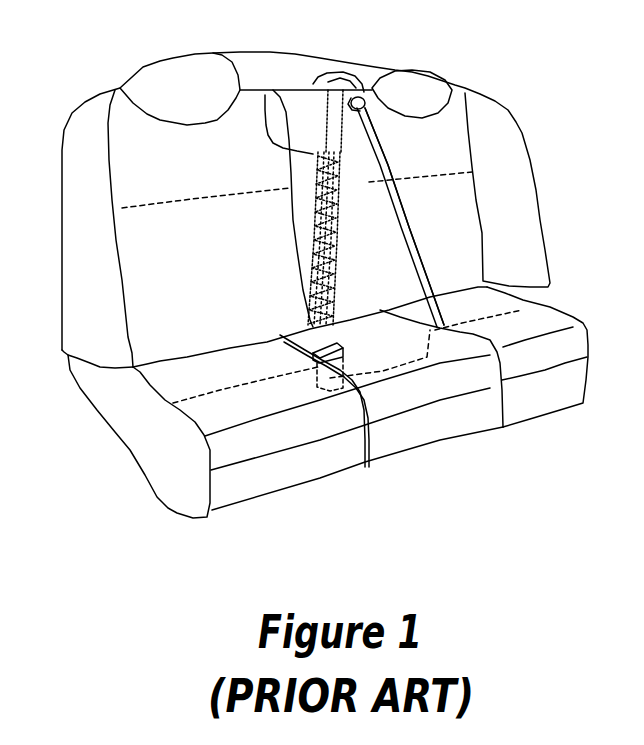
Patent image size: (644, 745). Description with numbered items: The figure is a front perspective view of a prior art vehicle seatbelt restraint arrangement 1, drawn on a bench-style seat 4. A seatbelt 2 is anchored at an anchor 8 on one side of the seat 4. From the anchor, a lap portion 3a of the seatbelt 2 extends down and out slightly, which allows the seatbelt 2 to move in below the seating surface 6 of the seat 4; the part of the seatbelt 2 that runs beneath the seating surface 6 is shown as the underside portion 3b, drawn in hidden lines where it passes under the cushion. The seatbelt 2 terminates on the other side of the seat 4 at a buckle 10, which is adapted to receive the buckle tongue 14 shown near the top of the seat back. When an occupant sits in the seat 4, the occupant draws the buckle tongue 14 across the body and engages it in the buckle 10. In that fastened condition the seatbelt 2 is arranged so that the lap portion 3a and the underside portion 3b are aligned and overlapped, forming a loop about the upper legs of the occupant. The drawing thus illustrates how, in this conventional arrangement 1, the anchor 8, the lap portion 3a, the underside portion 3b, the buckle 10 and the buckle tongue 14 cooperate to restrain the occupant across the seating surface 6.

The seatbelt restraint arrangement 1 is at (292, 271).
The seatbelt 2 is at (385, 208).
The lap portion 3a is at (419, 267).
The underside portion 3b is at (354, 434).
The seat 4 is at (380, 398).
The seating surface 6 is at (474, 339).
The anchor 8 is at (265, 95).
The buckle 10 is at (271, 344).
The buckle tongue 14 is at (360, 57).